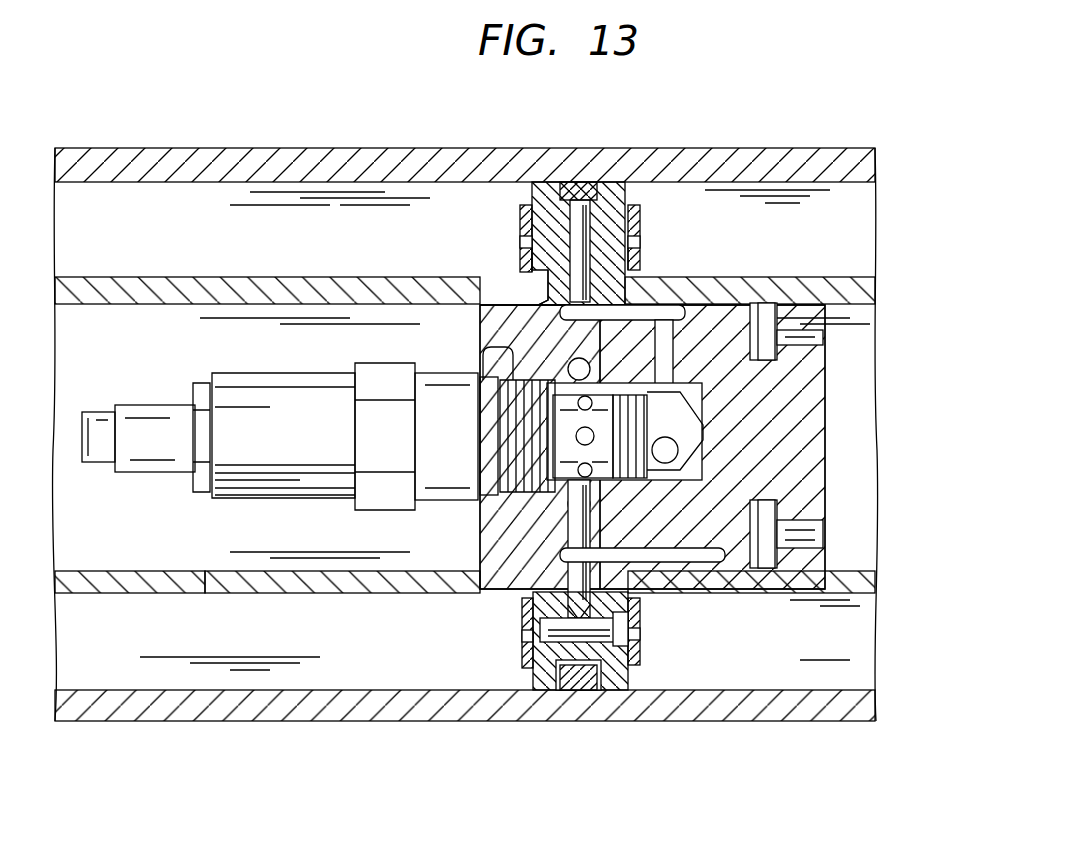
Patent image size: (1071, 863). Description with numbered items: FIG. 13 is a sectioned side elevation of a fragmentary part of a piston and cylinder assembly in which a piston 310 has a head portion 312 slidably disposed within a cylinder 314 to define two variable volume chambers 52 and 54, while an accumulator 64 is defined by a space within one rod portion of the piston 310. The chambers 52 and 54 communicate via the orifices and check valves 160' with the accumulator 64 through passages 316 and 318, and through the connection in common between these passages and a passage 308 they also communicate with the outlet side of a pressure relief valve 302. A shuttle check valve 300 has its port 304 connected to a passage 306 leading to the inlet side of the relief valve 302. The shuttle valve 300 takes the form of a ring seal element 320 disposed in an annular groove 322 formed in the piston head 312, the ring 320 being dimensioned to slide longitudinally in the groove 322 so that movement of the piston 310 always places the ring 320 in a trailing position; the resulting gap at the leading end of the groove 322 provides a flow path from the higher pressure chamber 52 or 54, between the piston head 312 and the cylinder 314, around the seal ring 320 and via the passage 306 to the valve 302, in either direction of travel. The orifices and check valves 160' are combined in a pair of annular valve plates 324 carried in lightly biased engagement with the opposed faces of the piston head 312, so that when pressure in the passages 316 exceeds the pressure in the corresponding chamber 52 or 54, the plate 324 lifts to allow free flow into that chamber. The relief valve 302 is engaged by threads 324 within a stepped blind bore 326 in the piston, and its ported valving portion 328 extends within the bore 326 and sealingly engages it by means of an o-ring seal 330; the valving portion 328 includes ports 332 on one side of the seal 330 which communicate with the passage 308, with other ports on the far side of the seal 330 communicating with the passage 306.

The variable volume chamber 52 is at (205, 256).
The variable volume chamber 54 is at (850, 228).
The accumulator 64 is at (868, 517).
The shuttle check valve 300 is at (578, 186).
The ring seal element 320 is at (568, 192).
The annular groove 322 is at (597, 190).
The port 304 is at (622, 182).
The annular valve plate 324 is at (520, 210).
The check valve 160' is at (571, 459).
The passage 306 is at (652, 345).
The piston 310 is at (815, 276).
The pressure relief valve 302 is at (279, 478).
The passage 308 is at (573, 517).
The passage 316 is at (577, 583).
The passage 318 is at (727, 553).
The piston head 312 is at (547, 678).
The cylinder 314 is at (726, 702).
The stepped blind bore 326 is at (665, 402).
The o-ring seal 330 is at (628, 425).
The ported valving portion 328 is at (602, 443).
The port 332 is at (575, 433).